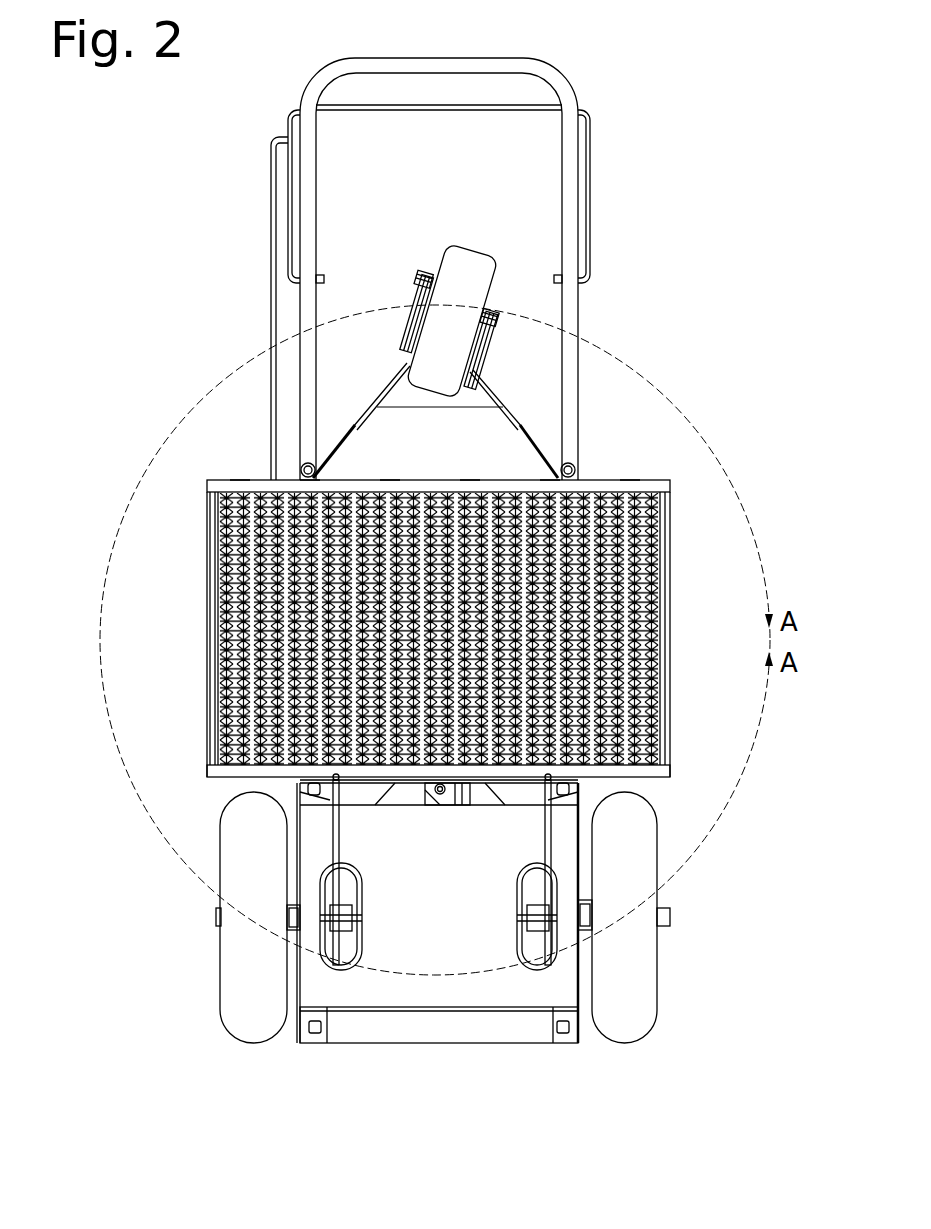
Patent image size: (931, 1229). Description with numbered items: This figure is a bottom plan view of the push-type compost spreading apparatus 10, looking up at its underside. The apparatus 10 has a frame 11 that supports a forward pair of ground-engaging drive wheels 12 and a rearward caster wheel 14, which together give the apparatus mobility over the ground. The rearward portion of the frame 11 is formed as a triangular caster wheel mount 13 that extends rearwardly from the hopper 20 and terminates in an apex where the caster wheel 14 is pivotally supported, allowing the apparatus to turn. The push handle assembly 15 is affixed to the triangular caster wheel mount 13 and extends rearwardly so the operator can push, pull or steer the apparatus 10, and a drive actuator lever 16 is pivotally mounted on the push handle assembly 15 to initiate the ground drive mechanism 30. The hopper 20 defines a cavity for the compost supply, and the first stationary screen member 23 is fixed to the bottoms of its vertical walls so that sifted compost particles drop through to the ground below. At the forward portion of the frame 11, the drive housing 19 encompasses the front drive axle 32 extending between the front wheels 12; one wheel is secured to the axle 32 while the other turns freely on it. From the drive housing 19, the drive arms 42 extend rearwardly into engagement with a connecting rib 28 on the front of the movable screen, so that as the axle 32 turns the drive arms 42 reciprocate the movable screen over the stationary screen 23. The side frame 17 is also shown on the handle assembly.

The compost spreading apparatus 10 is at (698, 140).
The frame 11 is at (585, 462).
The ground-engaging drive wheels 12 is at (238, 975).
The triangular caster wheel mount 13 is at (375, 427).
The caster wheel 14 is at (460, 275).
The push handle assembly 15 is at (566, 80).
The drive actuator lever 16 is at (590, 216).
The left side frame 17 is at (270, 285).
The drive housing 19 is at (443, 1033).
The hopper 20 is at (200, 510).
The first stationary screen member 23 is at (218, 628).
The connecting rib 28 is at (522, 790).
The ground drive mechanism 30 is at (327, 1052).
The front drive axle 32 is at (670, 918).
The drive arms 42 is at (546, 838).